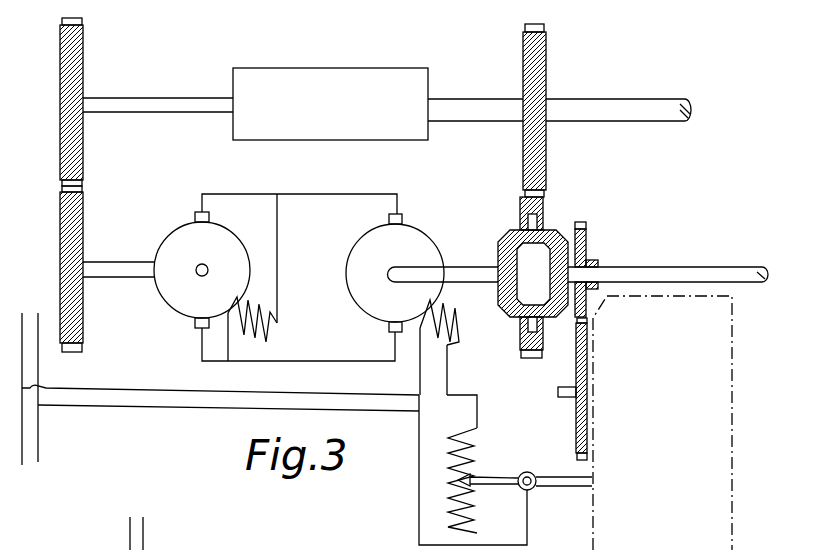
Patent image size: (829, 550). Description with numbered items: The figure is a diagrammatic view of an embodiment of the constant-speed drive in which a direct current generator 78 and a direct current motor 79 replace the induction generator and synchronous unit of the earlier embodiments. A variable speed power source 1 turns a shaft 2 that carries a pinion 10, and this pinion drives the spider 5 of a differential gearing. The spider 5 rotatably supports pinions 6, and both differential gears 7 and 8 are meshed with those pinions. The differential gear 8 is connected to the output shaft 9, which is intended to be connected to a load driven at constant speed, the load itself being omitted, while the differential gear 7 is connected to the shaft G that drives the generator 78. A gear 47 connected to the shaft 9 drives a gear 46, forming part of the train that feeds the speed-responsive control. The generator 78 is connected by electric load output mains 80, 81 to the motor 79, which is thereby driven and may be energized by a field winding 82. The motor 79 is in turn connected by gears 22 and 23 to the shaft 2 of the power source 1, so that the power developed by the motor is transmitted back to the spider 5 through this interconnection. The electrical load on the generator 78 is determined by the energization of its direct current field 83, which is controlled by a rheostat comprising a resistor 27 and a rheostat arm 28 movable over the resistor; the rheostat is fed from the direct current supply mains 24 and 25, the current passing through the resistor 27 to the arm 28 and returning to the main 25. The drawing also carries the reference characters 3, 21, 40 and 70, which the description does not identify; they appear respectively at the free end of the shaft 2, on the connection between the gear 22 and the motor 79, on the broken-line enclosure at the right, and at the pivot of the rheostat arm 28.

The variable speed power source 1 is at (302, 68).
The shaft 2 is at (150, 98).
The shaft end 3 is at (690, 113).
The spider 5 is at (545, 210).
The pinions 6 is at (543, 246).
The differential gear 7 is at (498, 247).
The differential gear 8 is at (572, 236).
The output shaft 9 is at (652, 267).
The pinion 10 is at (546, 160).
The shaft 21 is at (115, 262).
The gear 22 is at (83, 215).
The gear 23 is at (83, 155).
The direct current supply main 24 is at (25, 465).
The direct current supply main 25 is at (40, 444).
The resistor 27 is at (468, 515).
The rheostat arm 28 is at (491, 478).
The housing 40 is at (590, 503).
The gear 46 is at (575, 402).
The gear 47 is at (588, 255).
The pivot knob 70 is at (546, 476).
The direct current generator 78 is at (423, 238).
The direct current motor 79 is at (225, 235).
The electric load output main 80 is at (311, 194).
The electric load output main 81 is at (303, 361).
The field winding 82 is at (256, 336).
The direct current field 83 is at (458, 334).